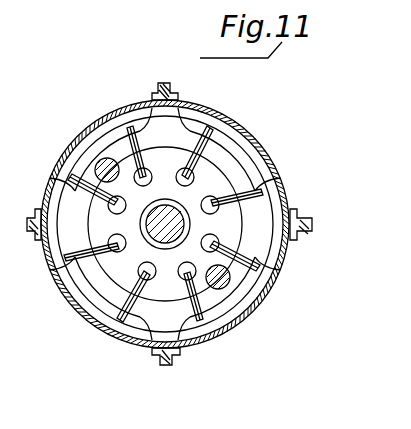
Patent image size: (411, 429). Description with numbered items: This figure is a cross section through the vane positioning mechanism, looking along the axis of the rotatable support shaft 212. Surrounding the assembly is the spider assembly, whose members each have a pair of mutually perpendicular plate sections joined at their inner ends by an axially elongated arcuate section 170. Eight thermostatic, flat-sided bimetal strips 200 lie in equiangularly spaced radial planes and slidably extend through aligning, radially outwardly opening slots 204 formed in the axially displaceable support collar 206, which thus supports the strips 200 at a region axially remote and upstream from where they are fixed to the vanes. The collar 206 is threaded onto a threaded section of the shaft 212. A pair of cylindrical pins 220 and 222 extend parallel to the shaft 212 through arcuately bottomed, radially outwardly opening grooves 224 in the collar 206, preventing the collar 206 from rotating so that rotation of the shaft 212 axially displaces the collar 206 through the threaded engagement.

The arcuate section 170 is at (57, 160).
The bimetal strips 200 is at (163, 95).
The slots 204 is at (88, 140).
The support collar 206 is at (217, 148).
The support shaft 212 is at (178, 224).
The cylindrical pin 220 is at (150, 170).
The cylindrical pin 222 is at (225, 333).
The grooves 224 is at (266, 316).